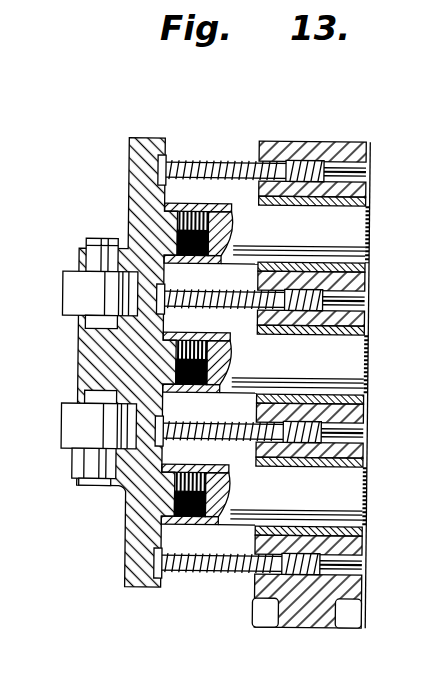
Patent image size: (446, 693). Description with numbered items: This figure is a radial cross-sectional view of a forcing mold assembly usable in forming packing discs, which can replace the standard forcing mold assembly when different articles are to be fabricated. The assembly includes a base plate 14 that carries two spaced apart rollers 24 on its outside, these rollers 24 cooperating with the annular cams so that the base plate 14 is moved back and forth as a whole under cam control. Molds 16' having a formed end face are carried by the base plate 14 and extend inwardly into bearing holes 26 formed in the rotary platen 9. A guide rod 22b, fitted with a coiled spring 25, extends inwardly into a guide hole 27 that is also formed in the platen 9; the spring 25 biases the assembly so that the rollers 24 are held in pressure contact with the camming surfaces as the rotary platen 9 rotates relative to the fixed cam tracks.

The rotary platen 9 is at (339, 148).
The base plate 14 is at (143, 146).
The mold 16' is at (322, 385).
The guide rod 22b is at (212, 163).
The roller 24 is at (72, 283).
The coiled spring 25 is at (240, 162).
The bearing hole 26 is at (338, 336).
The guide hole 27 is at (357, 165).